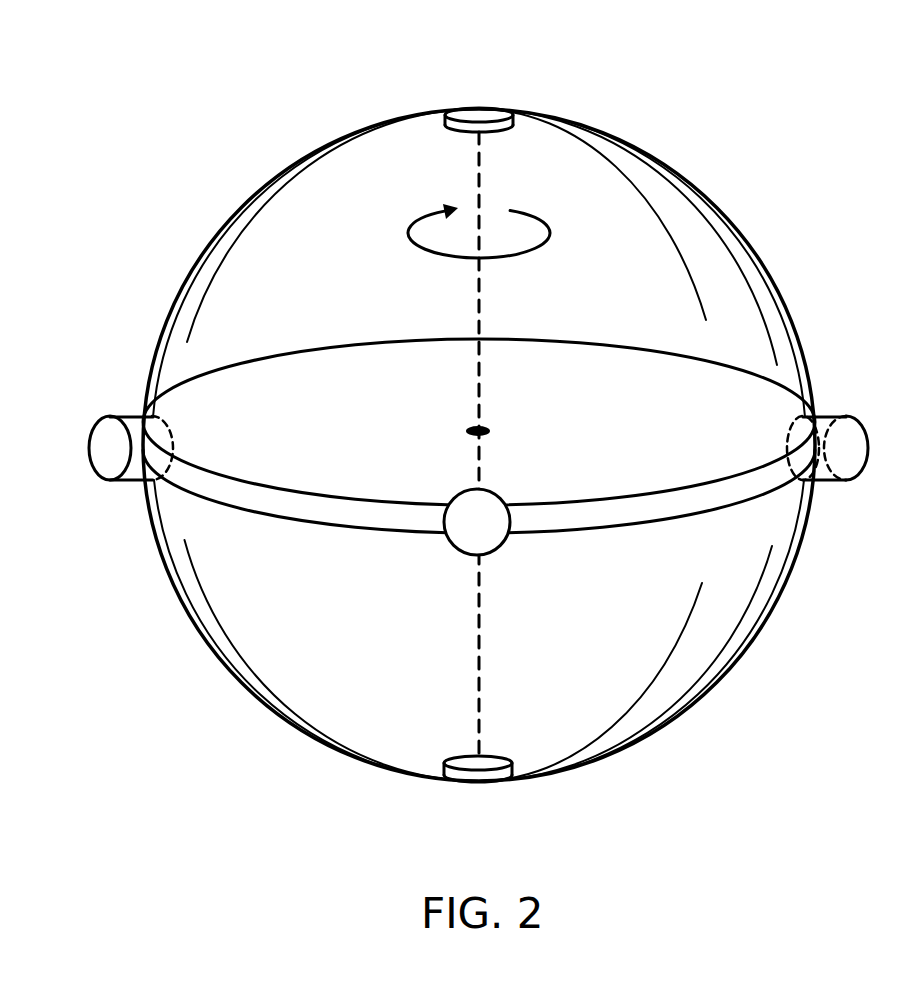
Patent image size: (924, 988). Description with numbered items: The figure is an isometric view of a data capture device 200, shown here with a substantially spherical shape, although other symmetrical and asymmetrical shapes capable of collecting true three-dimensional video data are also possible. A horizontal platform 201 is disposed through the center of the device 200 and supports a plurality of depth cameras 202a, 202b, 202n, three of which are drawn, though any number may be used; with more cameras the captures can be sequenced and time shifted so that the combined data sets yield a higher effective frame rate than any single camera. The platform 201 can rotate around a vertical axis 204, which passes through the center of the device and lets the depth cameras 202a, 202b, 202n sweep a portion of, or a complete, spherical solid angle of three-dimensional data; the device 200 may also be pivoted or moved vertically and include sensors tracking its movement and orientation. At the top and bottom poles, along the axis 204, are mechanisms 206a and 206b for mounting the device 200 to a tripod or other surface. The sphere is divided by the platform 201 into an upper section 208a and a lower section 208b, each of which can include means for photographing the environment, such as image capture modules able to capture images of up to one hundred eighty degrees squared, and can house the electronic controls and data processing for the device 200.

The data capture device 200 is at (296, 83).
The horizontal platform 201 is at (353, 500).
The depth camera 202a is at (121, 417).
The depth camera 202b is at (492, 492).
The depth camera 202n is at (838, 417).
The axis 204 is at (478, 640).
The mounting mechanism 206a is at (478, 108).
The mounting mechanism 206b is at (495, 785).
The upper section 208a is at (240, 205).
The lower section 208b is at (678, 718).